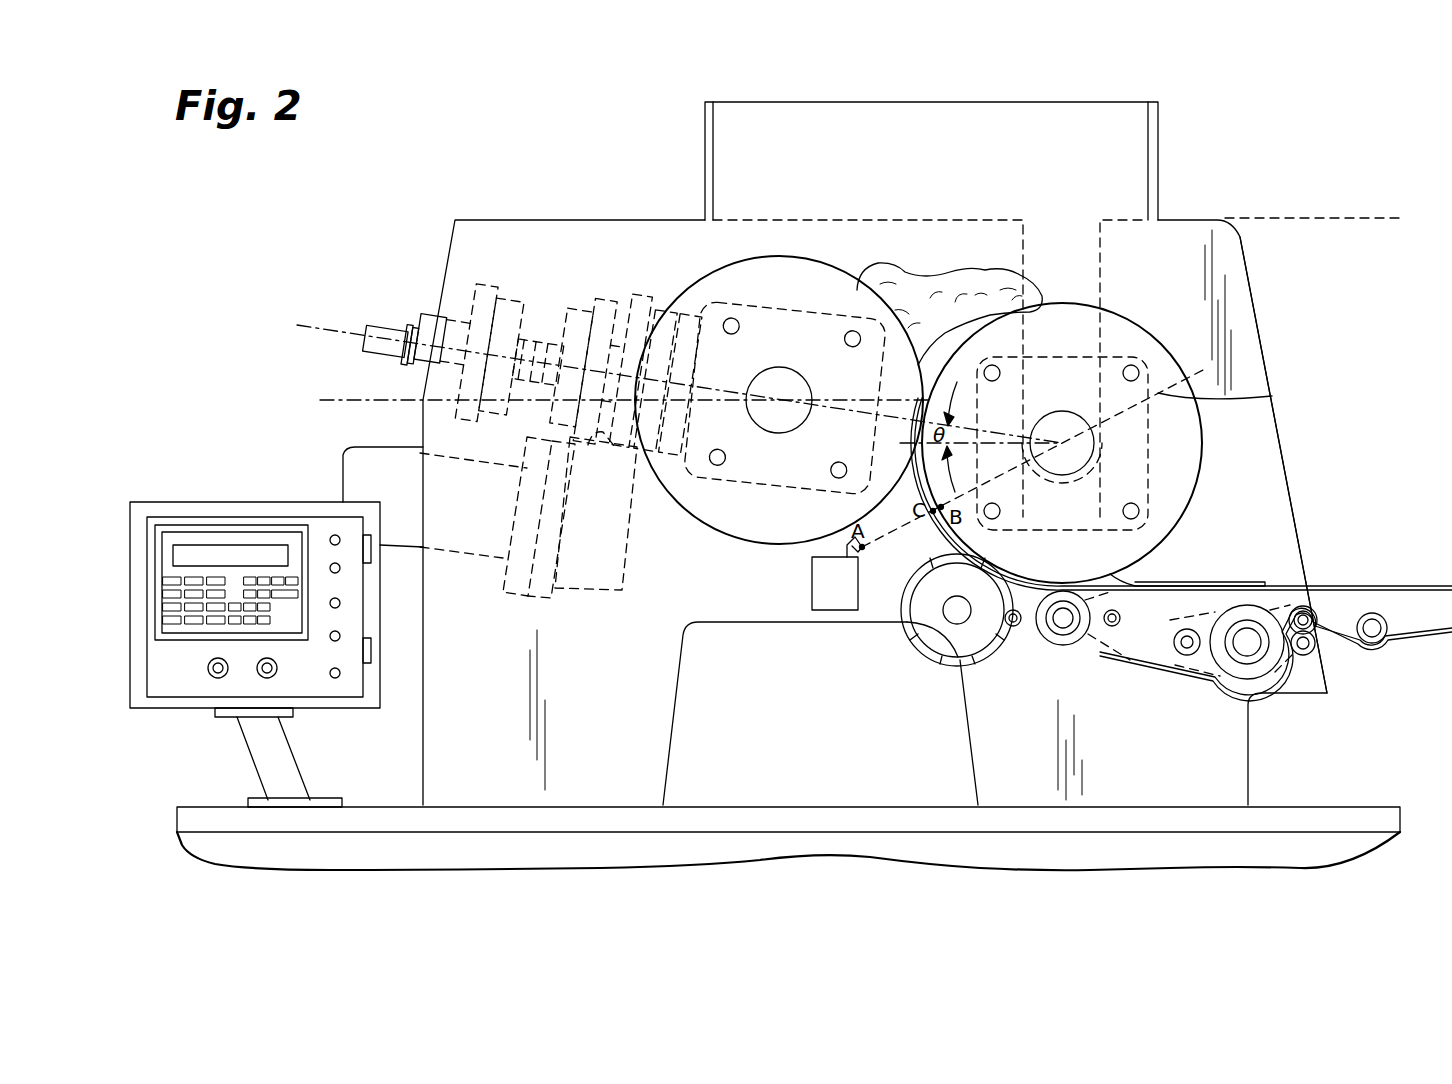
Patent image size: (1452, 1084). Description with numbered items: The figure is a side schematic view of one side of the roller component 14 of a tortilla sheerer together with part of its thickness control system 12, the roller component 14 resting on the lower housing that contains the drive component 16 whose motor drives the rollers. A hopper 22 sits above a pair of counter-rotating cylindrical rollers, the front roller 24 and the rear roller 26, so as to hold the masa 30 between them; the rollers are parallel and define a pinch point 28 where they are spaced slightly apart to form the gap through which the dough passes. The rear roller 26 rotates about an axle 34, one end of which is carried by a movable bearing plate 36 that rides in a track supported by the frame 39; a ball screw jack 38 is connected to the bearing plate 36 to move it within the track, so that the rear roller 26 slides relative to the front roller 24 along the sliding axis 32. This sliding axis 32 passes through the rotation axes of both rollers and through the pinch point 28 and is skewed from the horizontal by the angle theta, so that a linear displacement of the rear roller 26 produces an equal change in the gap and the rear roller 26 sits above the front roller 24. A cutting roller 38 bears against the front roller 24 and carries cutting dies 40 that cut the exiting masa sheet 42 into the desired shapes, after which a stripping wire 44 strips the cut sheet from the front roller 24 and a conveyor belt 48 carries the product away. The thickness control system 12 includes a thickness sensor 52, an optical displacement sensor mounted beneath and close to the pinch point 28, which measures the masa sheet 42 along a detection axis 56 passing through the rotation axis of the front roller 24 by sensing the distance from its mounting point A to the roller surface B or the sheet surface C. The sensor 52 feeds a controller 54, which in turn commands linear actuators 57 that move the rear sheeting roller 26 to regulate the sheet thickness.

The thickness control system 12 is at (213, 490).
The roller component 14 is at (1290, 125).
The drive component 16 is at (655, 771).
The hopper 22 is at (1158, 126).
The front roller 24 is at (1114, 320).
The rear roller 26 is at (702, 262).
The pinch point 28 is at (895, 418).
The masa 30 is at (905, 280).
The sliding axis 32 is at (325, 323).
The axle 34 is at (780, 384).
The bearing plate 36 is at (766, 322).
The ball screw jack 38 is at (429, 313).
The frame 39 is at (1248, 341).
The cutting dies 40 is at (968, 662).
The masa sheet 42 is at (922, 525).
The stripping wire 44 is at (1150, 580).
The conveyor belt 48 is at (1390, 584).
The thickness sensor 52 is at (812, 598).
The controller 54 is at (182, 676).
The detection axis 56 is at (1272, 396).
The linear actuator 57 is at (578, 296).